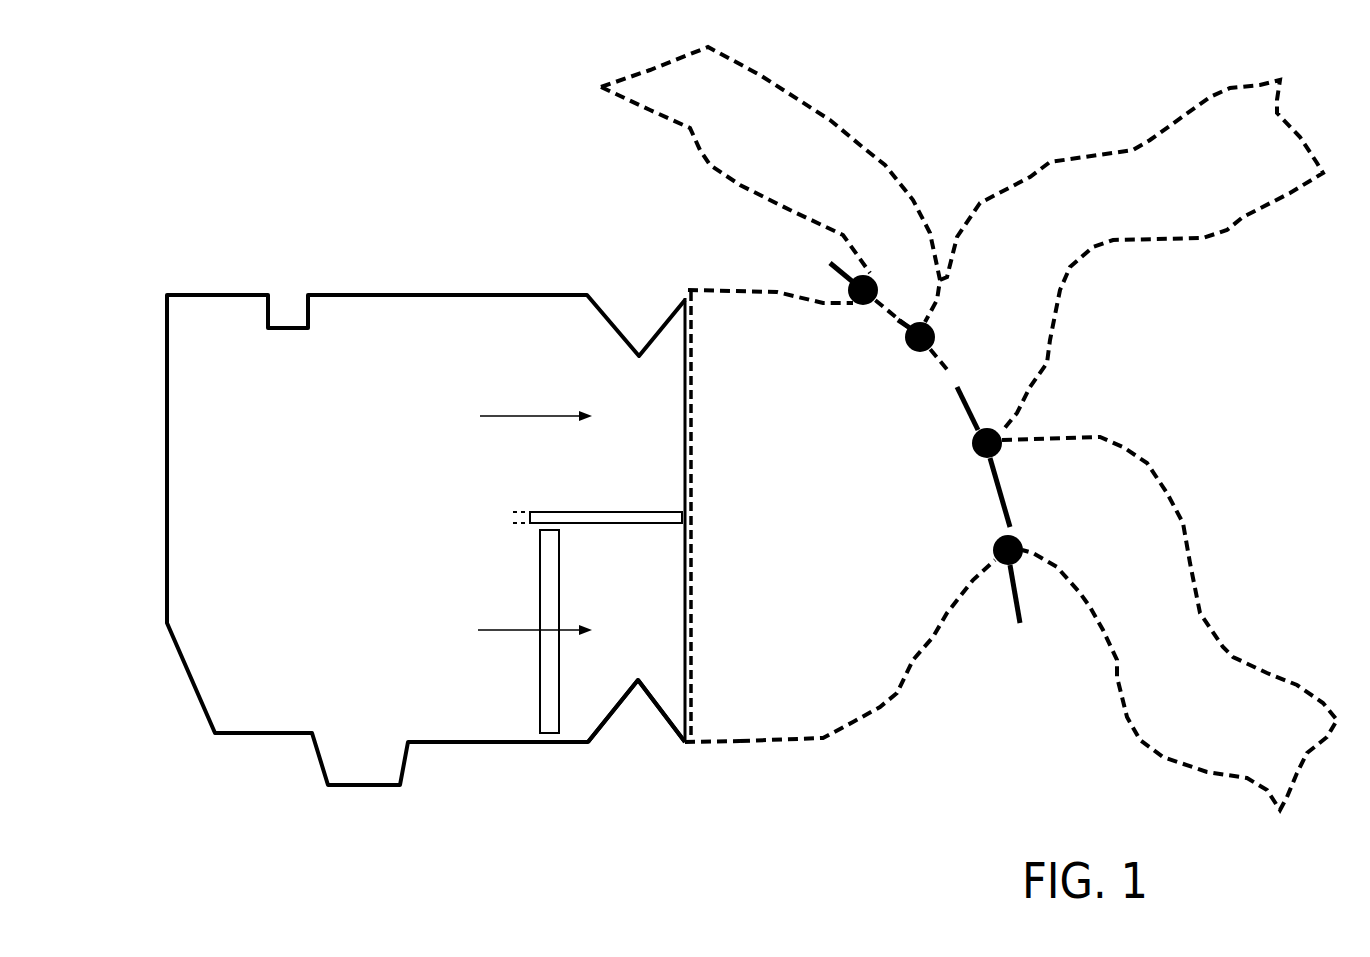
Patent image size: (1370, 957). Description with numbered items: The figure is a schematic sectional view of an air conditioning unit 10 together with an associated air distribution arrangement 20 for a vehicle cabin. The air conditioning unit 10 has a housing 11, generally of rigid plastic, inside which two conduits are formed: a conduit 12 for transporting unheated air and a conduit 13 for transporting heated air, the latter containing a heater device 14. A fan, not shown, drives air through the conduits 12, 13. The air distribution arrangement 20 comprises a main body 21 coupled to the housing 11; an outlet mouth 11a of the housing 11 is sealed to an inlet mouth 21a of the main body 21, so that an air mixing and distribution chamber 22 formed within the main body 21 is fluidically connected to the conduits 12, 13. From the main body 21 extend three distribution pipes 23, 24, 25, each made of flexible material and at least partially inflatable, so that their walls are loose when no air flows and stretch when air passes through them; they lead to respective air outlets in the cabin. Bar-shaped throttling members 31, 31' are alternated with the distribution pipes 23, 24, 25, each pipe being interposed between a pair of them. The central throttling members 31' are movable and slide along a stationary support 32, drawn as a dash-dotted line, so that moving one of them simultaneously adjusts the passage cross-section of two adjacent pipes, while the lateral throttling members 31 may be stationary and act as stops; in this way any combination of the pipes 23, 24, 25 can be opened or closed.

The air conditioning unit 10 is at (433, 491).
The housing 11 is at (275, 735).
The outlet mouth 11a is at (700, 300).
The conduit for transporting unheated air 12 is at (520, 370).
The conduit for transporting heated air 13 is at (607, 690).
The heater device 14 is at (545, 725).
The air distribution arrangement 20 is at (969, 425).
The main body 21 is at (822, 695).
The inlet mouth 21a is at (690, 705).
The air mixing and distribution chamber 22 is at (765, 400).
The distribution pipe 23 is at (820, 125).
The distribution pipe 24 is at (1143, 140).
The distribution pipe 25 is at (1230, 650).
The throttling member 31 is at (959, 372).
The movable throttling member 31' is at (1008, 300).
The stationary support 32 is at (1010, 607).